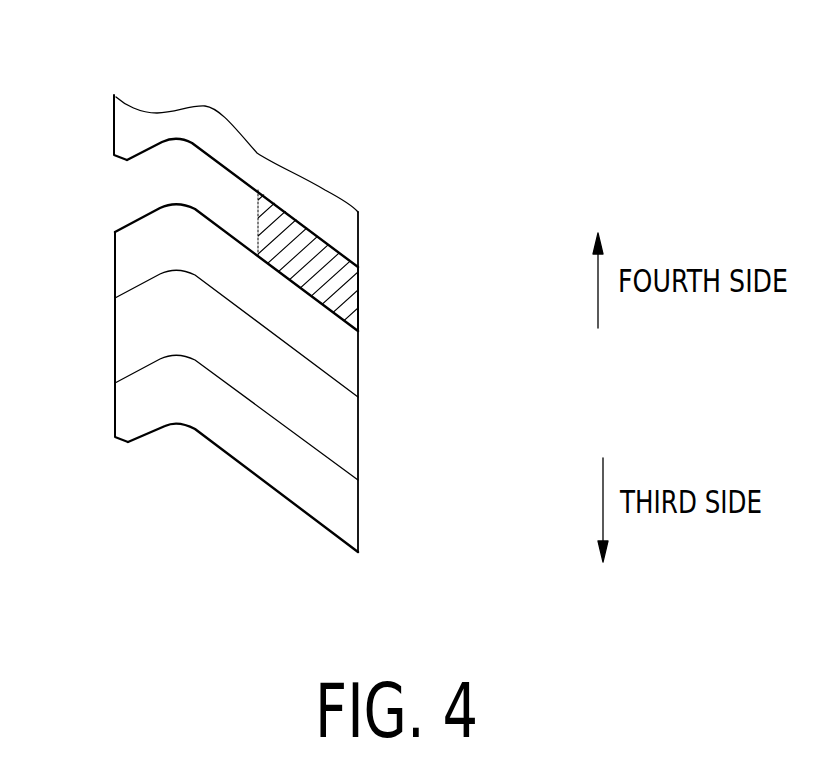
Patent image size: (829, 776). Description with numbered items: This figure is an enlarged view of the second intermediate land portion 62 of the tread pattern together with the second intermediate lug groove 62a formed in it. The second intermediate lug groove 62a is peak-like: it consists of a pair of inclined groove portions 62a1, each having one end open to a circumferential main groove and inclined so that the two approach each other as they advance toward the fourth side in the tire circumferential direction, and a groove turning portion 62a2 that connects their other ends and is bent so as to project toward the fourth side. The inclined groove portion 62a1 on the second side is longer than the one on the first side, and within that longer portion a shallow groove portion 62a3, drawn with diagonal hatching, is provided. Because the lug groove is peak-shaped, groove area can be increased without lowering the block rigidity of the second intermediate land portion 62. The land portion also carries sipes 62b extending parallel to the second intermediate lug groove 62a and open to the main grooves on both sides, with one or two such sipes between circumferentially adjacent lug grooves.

The second intermediate land portion 62 is at (361, 360).
The second intermediate lug groove 62a is at (128, 178).
The inclined groove portion 62a1 is at (132, 170).
The groove turning portion 62a2 is at (178, 155).
The shallow groove portion 62a3 is at (360, 287).
The sipe 62b is at (252, 313).